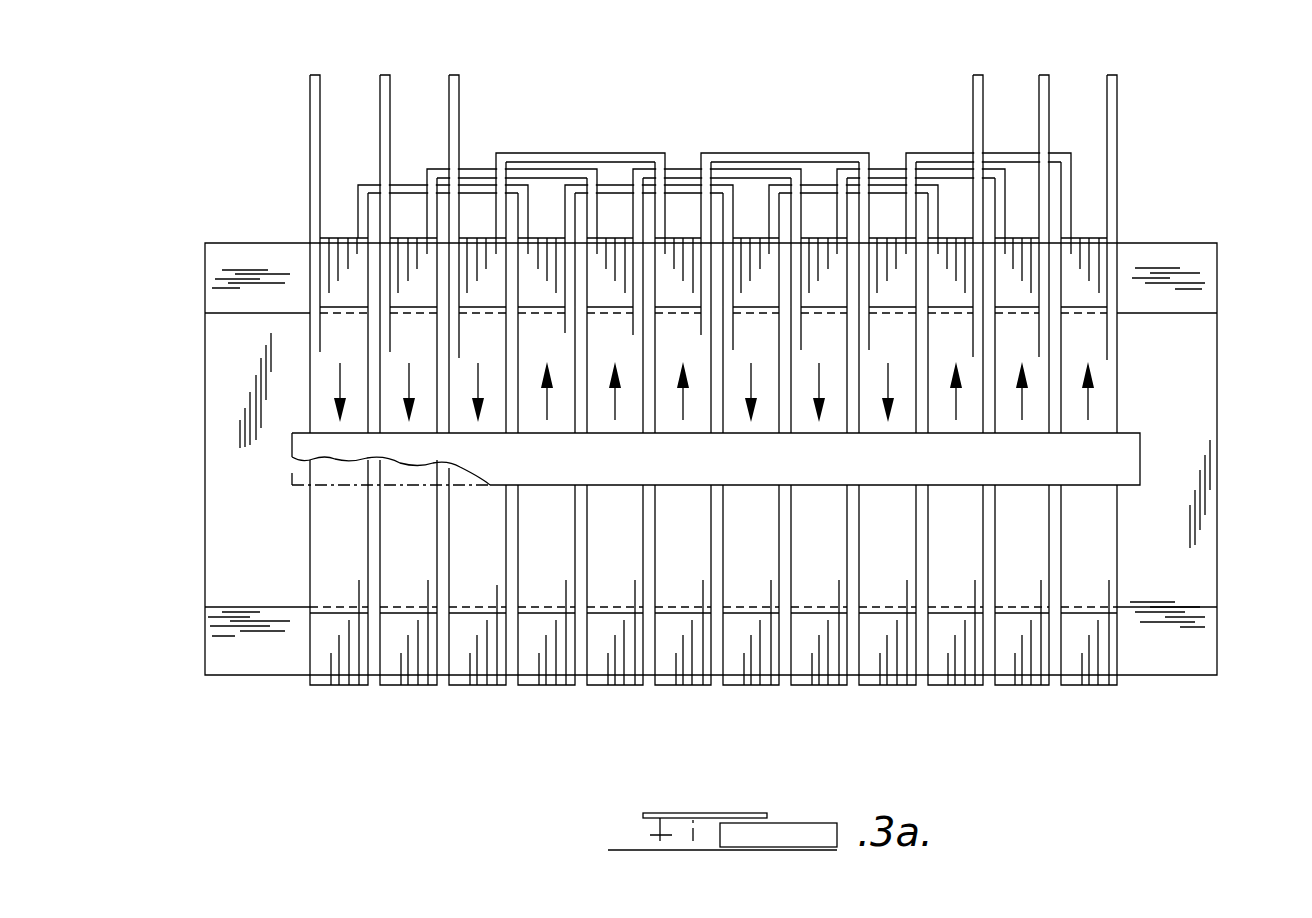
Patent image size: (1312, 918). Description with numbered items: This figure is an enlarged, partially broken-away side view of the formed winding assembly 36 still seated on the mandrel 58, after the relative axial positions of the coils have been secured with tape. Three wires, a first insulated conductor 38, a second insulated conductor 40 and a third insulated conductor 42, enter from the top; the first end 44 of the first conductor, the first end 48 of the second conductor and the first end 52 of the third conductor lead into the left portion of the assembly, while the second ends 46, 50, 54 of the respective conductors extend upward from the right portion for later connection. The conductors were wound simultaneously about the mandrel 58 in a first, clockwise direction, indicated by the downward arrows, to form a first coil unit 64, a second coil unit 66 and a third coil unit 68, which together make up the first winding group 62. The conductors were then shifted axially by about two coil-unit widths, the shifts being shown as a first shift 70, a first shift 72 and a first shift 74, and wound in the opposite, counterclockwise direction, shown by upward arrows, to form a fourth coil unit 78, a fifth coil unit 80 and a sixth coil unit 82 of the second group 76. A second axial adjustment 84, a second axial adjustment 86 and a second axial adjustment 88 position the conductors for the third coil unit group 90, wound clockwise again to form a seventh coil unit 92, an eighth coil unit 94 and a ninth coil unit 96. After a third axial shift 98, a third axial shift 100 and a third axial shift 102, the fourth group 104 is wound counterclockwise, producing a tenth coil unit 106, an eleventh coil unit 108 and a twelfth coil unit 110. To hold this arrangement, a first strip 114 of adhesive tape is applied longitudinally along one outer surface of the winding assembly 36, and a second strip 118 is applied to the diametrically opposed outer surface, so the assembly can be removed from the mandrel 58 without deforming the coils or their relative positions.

The winding assembly 36 is at (1170, 199).
The first insulated conductor 38 is at (300, 100).
The second insulated conductor 40 is at (371, 88).
The third insulated conductor 42 is at (440, 89).
The first end of first insulated conductor 44 is at (310, 128).
The second end of first insulated conductor 46 is at (973, 95).
The first end of second insulated conductor 48 is at (380, 128).
The second end of second insulated conductor 50 is at (1039, 90).
The first end of third insulated conductor 52 is at (459, 108).
The second end of third insulated conductor 54 is at (1117, 95).
The mandrel 58 is at (196, 376).
The first winding group 62 is at (310, 756).
The first coil unit 64 is at (310, 697).
The second coil unit 66 is at (380, 697).
The third coil unit 68 is at (449, 697).
The first axial shift of first insulated conductor 70 is at (358, 185).
The first axial shift of second insulated conductor 72 is at (430, 169).
The first axial shift of third insulated conductor 74 is at (510, 153).
The second group of coil units 76 is at (518, 756).
The fourth coil unit 78 is at (518, 697).
The fifth coil unit 80 is at (587, 697).
The sixth coil unit 82 is at (655, 697).
The second axial adjustment of first insulated conductor 84 is at (617, 185).
The second axial adjustment of second insulated conductor 86 is at (682, 169).
The second axial adjustment of third insulated conductor 88 is at (748, 153).
The third coil unit group 90 is at (723, 756).
The seventh coil unit 92 is at (723, 697).
The eighth coil unit 94 is at (791, 697).
The ninth coil unit 96 is at (859, 697).
The third axial shift of first insulated conductor 98 is at (815, 185).
The third axial shift of second insulated conductor 100 is at (875, 169).
The third axial shift of third insulated conductor 102 is at (928, 153).
The fourth group of coil units 104 is at (1117, 756).
The tenth coil unit 106 is at (928, 697).
The eleventh coil unit 108 is at (995, 697).
The twelfth coil unit 110 is at (1061, 697).
The first strip of adhesive tape 114 is at (1158, 455).
The second strip of adhesive tape 118 is at (282, 478).